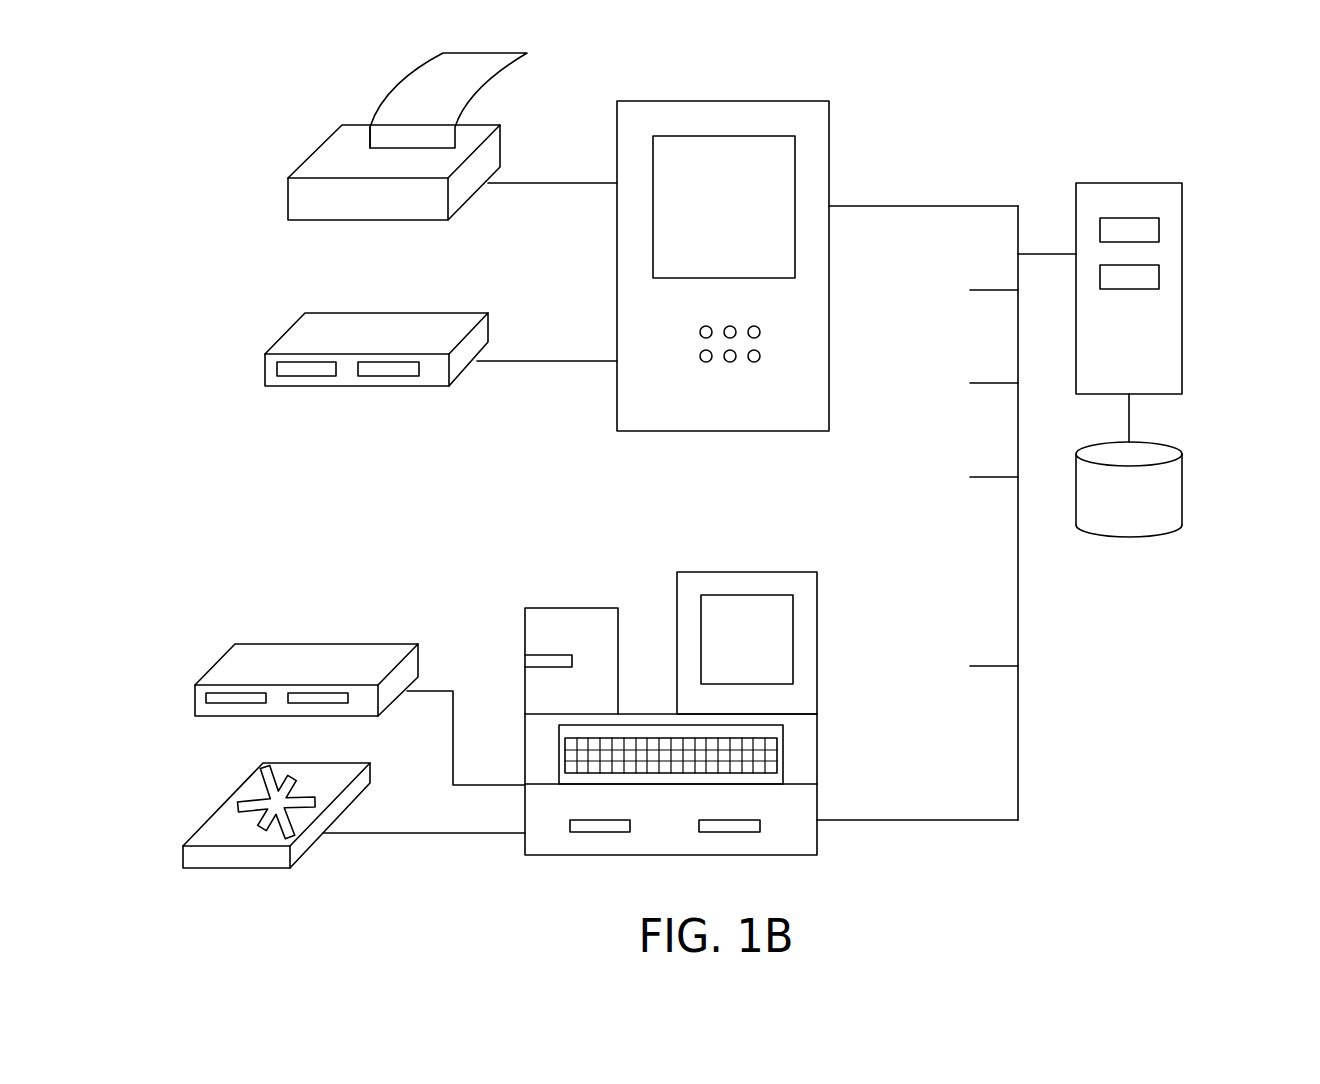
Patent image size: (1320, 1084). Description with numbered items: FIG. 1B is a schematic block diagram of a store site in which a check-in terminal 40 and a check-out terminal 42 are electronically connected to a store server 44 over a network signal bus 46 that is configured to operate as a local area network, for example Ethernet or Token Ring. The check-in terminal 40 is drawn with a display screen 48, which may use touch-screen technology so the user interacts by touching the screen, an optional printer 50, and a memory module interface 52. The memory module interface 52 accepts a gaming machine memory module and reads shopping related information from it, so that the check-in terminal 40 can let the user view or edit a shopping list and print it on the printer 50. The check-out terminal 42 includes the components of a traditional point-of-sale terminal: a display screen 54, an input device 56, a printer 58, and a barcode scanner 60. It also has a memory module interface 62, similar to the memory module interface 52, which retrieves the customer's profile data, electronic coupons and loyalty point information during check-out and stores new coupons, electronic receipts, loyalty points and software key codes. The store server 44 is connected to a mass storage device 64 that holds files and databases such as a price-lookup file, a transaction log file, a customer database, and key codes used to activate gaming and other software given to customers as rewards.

The check-in terminal 40 is at (763, 247).
The check-out terminal 42 is at (709, 684).
The store server 44 is at (1184, 212).
The network signal bus 46 is at (1022, 762).
The display screen 48 is at (799, 184).
The printer 50 is at (502, 158).
The memory module interface 52 is at (490, 332).
The display screen 54 is at (737, 595).
The input device 56 is at (783, 772).
The printer 58 is at (600, 602).
The barcode scanner 60 is at (218, 808).
The memory module interface 62 is at (410, 642).
The mass storage device 64 is at (1184, 497).